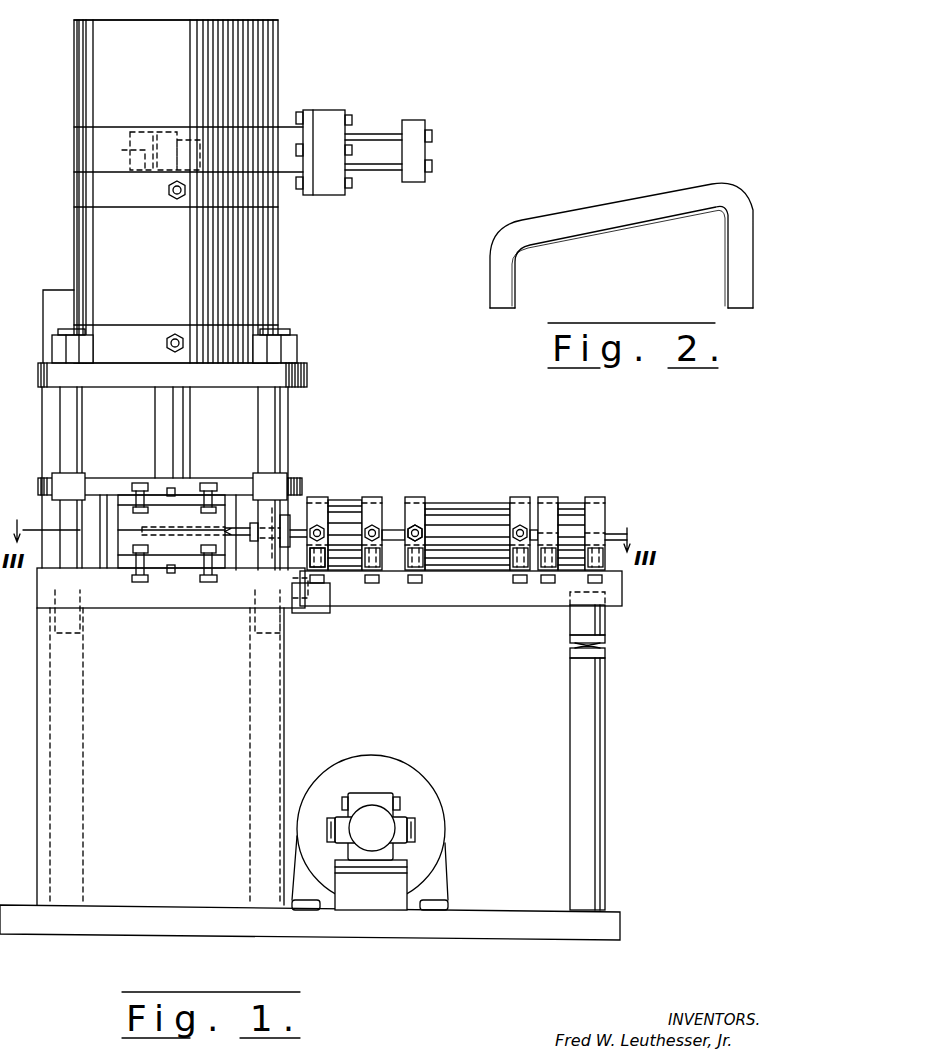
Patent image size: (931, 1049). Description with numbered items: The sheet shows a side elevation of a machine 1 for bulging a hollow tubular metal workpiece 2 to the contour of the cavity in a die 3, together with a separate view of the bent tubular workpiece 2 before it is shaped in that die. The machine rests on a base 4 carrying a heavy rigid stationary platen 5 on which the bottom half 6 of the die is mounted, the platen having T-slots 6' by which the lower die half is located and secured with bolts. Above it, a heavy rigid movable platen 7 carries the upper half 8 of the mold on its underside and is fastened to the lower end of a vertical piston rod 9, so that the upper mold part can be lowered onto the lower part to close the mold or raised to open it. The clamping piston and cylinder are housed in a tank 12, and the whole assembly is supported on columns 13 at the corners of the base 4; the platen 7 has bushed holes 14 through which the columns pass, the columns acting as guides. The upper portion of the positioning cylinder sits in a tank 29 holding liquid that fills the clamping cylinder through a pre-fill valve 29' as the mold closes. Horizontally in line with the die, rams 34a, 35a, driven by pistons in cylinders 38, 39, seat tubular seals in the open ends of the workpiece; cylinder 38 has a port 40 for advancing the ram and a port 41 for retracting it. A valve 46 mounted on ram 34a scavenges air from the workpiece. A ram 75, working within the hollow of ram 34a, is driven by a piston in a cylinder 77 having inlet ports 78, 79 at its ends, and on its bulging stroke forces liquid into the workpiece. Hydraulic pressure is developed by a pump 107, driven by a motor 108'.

In FIG. 1, the machine 1 is at (380, 412).
In FIG. 2, the workpiece 2 is at (636, 192).
In FIG. 1, the die 3 is at (243, 563).
In FIG. 1, the base 4 is at (158, 690).
In FIG. 1, the stationary platen 5 is at (186, 602).
In FIG. 1, the bottom half of die 6 is at (155, 531).
In FIG. 1, the T-slots 6' is at (171, 543).
In FIG. 1, the movable platen 7 is at (233, 480).
In FIG. 1, the upper half of mold 8 is at (218, 526).
In FIG. 1, the piston rod 9 is at (189, 432).
In FIG. 1, the tank 12 is at (279, 242).
In FIG. 1, the columns 13 is at (63, 428).
In FIG. 1, the bushed holes 14 is at (291, 478).
In FIG. 1, the tank 29 is at (197, 42).
In FIG. 1, the pre-fill valve 29' is at (355, 140).
In FIG. 1, the ram 34a is at (393, 526).
In FIG. 1, the ram 35a is at (540, 528).
In FIG. 1, the cylinder 38 is at (350, 500).
In FIG. 1, the cylinder 39 is at (570, 510).
In FIG. 1, the port 40 is at (368, 548).
In FIG. 1, the port 41 is at (318, 548).
In FIG. 1, the valve 46 is at (293, 520).
In FIG. 1, the ram 75 is at (402, 545).
In FIG. 1, the cylinder 77 is at (473, 510).
In FIG. 1, the inlet port 78 is at (518, 530).
In FIG. 1, the inlet port 79 is at (420, 528).
In FIG. 1, the pump 107 is at (390, 817).
In FIG. 1, the motor 108' is at (370, 814).